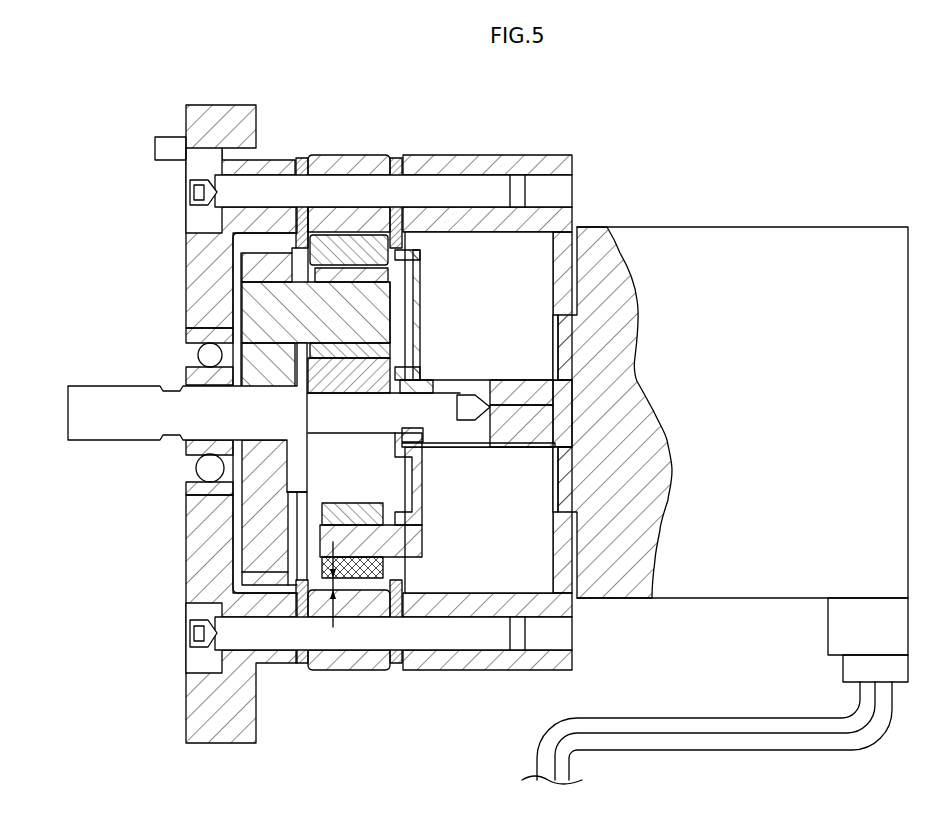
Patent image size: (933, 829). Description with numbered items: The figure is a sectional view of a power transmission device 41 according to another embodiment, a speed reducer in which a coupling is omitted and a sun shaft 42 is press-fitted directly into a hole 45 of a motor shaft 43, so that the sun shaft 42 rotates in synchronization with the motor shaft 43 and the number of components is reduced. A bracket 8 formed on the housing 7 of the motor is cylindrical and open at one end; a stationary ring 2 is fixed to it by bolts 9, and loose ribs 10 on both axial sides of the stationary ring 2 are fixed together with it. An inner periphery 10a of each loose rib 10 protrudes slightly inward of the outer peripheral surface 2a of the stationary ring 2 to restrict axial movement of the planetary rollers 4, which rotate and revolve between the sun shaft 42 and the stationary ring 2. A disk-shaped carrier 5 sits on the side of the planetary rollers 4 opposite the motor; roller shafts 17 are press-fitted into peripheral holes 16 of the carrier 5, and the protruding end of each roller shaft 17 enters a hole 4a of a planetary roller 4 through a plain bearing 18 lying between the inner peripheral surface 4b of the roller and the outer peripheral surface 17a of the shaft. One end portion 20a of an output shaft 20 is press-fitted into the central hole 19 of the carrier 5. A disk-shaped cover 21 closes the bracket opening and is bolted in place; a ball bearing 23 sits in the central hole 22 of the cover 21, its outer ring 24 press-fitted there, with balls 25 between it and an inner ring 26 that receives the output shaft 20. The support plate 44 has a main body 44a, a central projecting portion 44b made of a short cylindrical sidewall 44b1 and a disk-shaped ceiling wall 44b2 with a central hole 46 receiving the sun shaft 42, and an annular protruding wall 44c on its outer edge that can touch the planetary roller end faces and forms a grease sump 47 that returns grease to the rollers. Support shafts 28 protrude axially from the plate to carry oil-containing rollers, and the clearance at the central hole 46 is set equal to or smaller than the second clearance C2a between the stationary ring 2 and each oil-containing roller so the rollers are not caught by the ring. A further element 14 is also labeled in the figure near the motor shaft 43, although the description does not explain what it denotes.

The stationary ring 2 is at (337, 156).
The outer peripheral surface of the stationary ring 2a is at (313, 237).
The planetary roller 4 is at (260, 243).
The hole of the planetary roller 4a is at (305, 349).
The inner peripheral surface of the planetary roller 4b is at (351, 233).
The carrier 5 is at (253, 547).
The housing 7 is at (615, 257).
The bracket 8 is at (470, 155).
The bolts 9 is at (417, 187).
The loose rib 10 is at (300, 158).
The inner periphery of the loose rib 10a is at (303, 246).
The stator core 14 is at (530, 432).
The peripheral hole 16 is at (402, 319).
The roller shaft 17 is at (250, 295).
The outer peripheral surface of the roller shaft 17a is at (330, 350).
The plain bearing 18 is at (362, 350).
The central hole of the carrier 19 is at (233, 493).
The output shaft 20 is at (88, 392).
The end portion of the output shaft 20a is at (303, 435).
The cover 21 is at (220, 113).
The central hole of the cover 22 is at (190, 336).
The ball bearing 23 is at (157, 487).
The outer ring 24 is at (190, 490).
The balls 25 is at (197, 467).
The inner ring 26 is at (187, 447).
The support shaft 28 is at (367, 542).
The power transmission device 41 is at (318, 150).
The sun shaft 42 is at (452, 418).
The motor shaft 43 is at (530, 403).
The support plate 44 is at (472, 257).
The main body 44a is at (420, 303).
The projecting portion 44b is at (472, 354).
The sidewall 44b1 is at (400, 367).
The ceiling wall 44b2 is at (402, 382).
The protruding wall 44c is at (407, 252).
The hole 45 is at (427, 432).
The central hole 46 is at (415, 428).
The grease sump 47 is at (262, 343).
The second clearance C2a is at (333, 627).